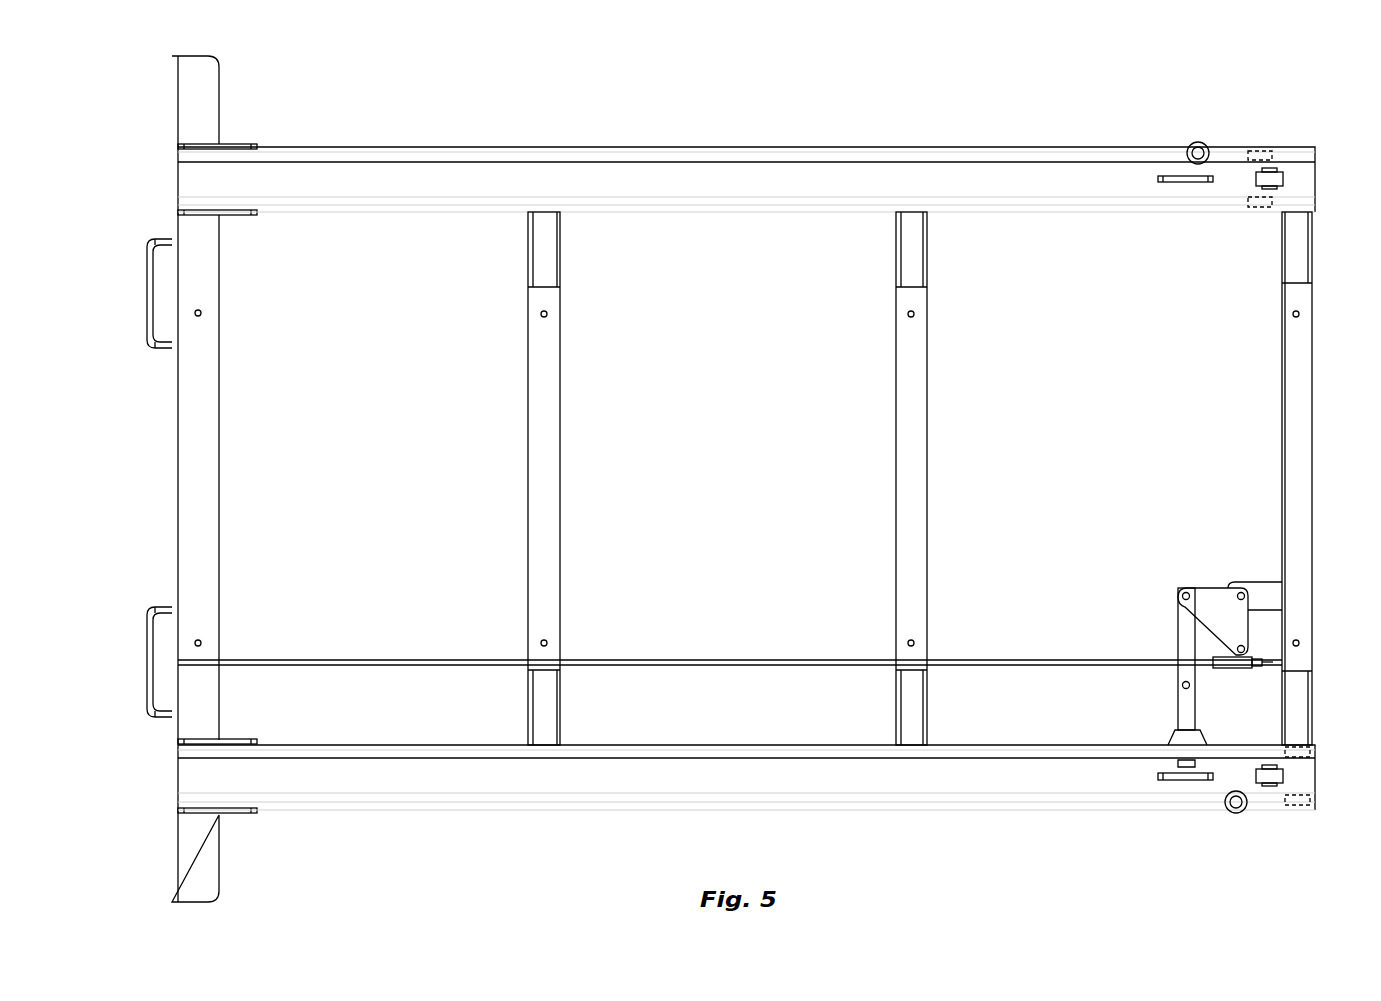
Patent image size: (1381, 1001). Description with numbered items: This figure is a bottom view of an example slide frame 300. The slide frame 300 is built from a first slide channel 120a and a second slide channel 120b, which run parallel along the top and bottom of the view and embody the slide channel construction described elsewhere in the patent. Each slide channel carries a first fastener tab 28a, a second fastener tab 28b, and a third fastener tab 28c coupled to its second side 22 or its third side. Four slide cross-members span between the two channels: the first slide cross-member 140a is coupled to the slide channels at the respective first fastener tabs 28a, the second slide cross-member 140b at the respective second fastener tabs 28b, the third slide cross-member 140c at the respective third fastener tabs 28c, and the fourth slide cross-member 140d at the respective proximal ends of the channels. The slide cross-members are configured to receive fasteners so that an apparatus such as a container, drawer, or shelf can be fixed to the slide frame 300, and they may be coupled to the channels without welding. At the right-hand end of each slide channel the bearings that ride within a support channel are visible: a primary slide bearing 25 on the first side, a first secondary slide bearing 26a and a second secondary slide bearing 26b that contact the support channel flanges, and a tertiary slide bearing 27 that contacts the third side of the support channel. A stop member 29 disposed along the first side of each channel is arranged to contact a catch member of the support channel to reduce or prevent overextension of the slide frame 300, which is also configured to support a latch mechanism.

The slide frame 300 is at (1304, 84).
The first slide channel 120a is at (929, 147).
The second slide channel 120b is at (929, 810).
The first slide cross-member 140a is at (1299, 486).
The second slide cross-member 140b is at (914, 486).
The third slide cross-member 140c is at (547, 486).
The fourth slide cross-member 140d is at (207, 486).
The first fastener tab 28a is at (1300, 272).
The second fastener tab 28b is at (915, 272).
The third fastener tab 28c is at (548, 272).
The second side 22 is at (1200, 142).
The primary slide bearing 25 is at (1283, 178).
The first secondary slide bearing 26a is at (1272, 156).
The second secondary slide bearing 26b is at (1272, 202).
The tertiary slide bearing 27 is at (1233, 813).
The stop member 29 is at (1175, 176).